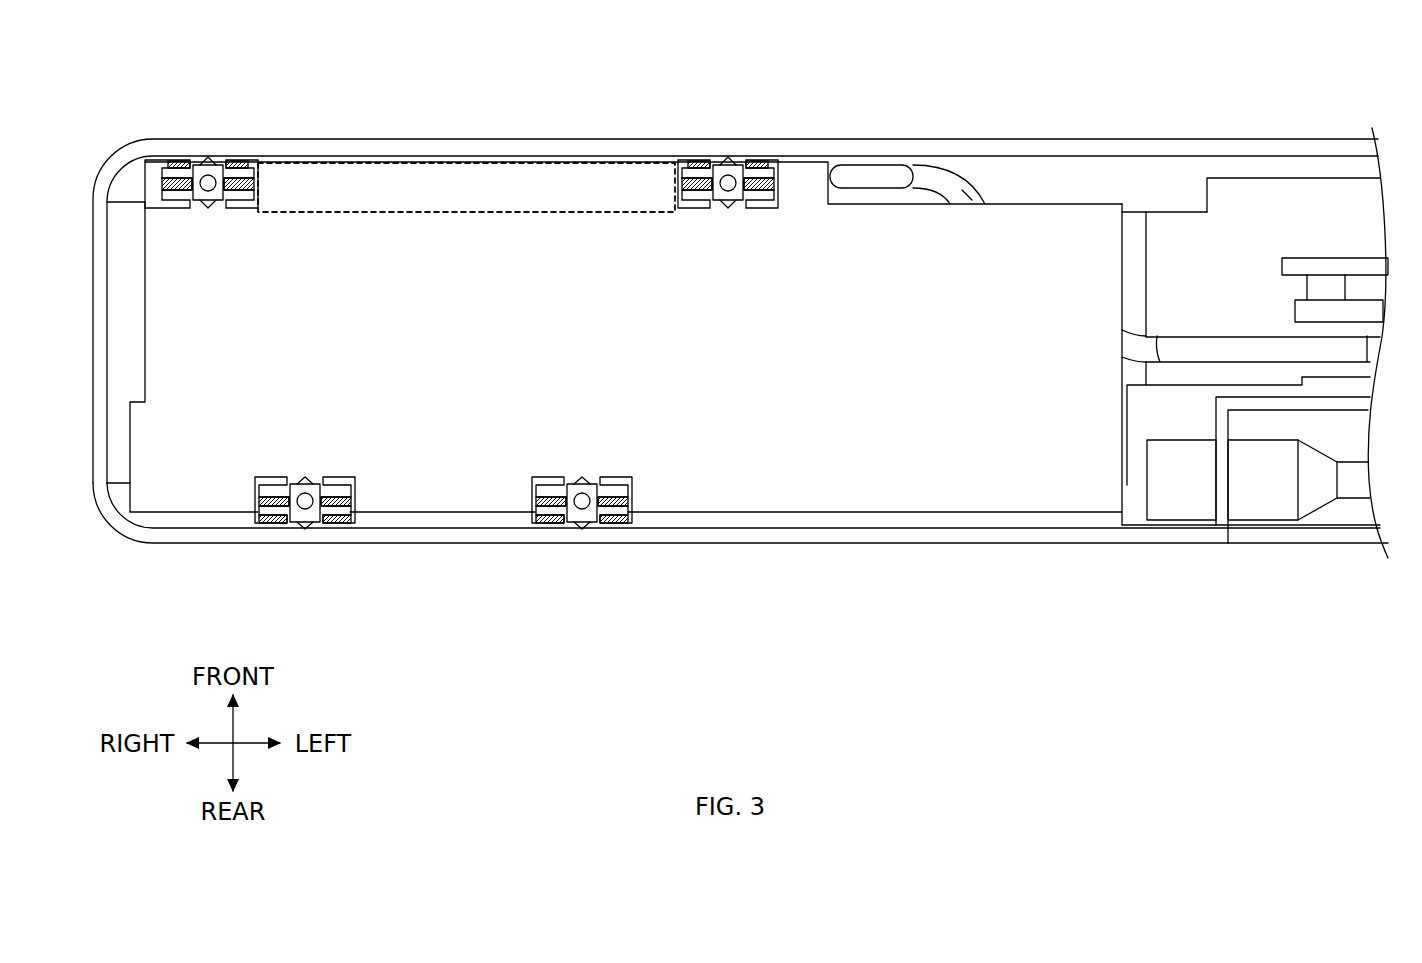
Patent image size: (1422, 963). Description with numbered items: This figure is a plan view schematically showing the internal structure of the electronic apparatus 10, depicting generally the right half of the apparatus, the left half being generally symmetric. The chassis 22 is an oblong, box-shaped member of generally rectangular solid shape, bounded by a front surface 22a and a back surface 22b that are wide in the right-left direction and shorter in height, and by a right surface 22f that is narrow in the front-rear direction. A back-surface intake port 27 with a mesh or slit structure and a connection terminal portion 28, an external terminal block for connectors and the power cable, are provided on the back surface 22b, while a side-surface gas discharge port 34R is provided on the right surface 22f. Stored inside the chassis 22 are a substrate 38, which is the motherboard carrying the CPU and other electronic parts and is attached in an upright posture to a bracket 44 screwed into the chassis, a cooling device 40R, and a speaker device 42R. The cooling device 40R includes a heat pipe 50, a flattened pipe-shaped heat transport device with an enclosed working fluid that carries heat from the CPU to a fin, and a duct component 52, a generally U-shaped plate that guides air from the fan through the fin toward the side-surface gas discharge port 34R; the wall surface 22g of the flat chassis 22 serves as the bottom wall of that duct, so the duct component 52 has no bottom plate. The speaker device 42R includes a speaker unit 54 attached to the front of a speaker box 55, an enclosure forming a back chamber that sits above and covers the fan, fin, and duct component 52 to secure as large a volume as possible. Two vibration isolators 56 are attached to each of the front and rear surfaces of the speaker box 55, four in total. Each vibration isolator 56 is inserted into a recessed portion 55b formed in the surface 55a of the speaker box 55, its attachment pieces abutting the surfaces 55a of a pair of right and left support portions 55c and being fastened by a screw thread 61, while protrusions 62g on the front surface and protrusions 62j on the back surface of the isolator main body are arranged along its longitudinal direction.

The electronic apparatus 10 is at (111, 37).
The chassis 22 is at (300, 116).
The front surface 22a is at (1240, 138).
The back surface 22b is at (806, 543).
The right surface 22f is at (93, 432).
The wall surface 22g is at (1175, 178).
The back-surface intake port 27 is at (997, 535).
The connection terminal portion 28 is at (1329, 514).
The side-surface gas discharge port 34R is at (93, 272).
The substrate 38 is at (1367, 312).
The cooling device 40R is at (1080, 183).
The speaker device 42R is at (437, 482).
The bracket 44 is at (1326, 252).
The heat pipe 50 is at (888, 170).
The duct component 52 is at (130, 342).
The speaker unit 54 is at (430, 182).
The speaker box 55 is at (574, 276).
The surface 55a is at (702, 170).
The recessed portion 55b is at (687, 122).
The support portion 55c is at (180, 210).
The vibration isolator 56 is at (226, 160).
The screw thread 61 is at (185, 163).
The protrusion 62g is at (206, 158).
The protrusion 62j is at (210, 205).